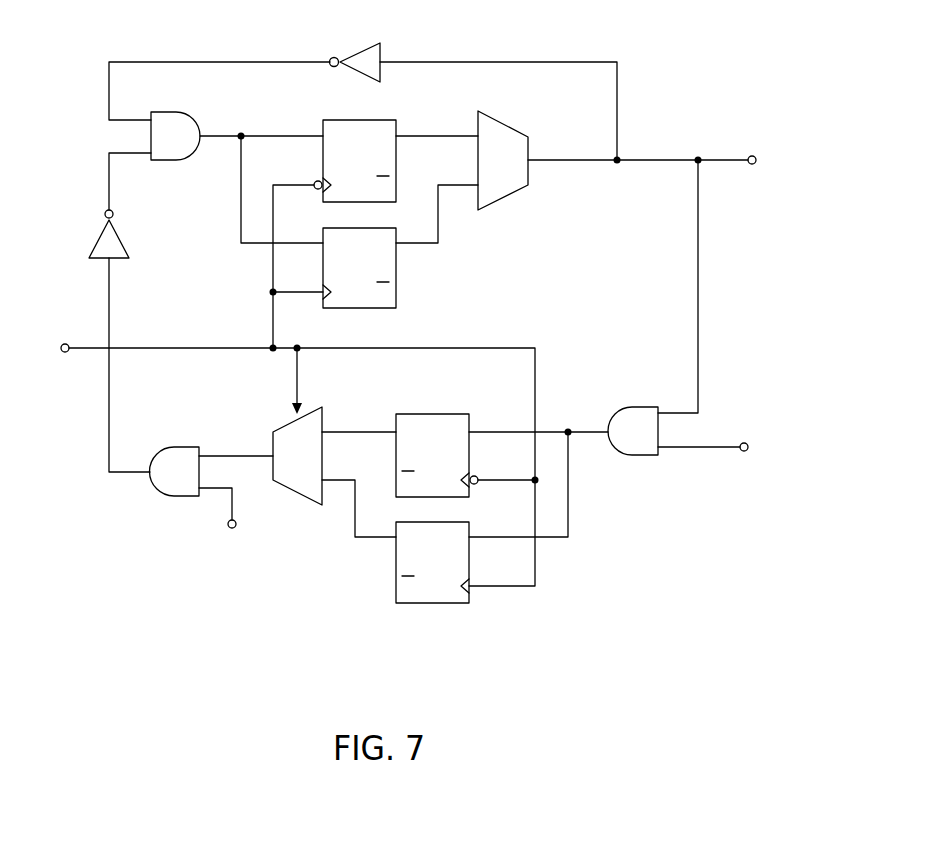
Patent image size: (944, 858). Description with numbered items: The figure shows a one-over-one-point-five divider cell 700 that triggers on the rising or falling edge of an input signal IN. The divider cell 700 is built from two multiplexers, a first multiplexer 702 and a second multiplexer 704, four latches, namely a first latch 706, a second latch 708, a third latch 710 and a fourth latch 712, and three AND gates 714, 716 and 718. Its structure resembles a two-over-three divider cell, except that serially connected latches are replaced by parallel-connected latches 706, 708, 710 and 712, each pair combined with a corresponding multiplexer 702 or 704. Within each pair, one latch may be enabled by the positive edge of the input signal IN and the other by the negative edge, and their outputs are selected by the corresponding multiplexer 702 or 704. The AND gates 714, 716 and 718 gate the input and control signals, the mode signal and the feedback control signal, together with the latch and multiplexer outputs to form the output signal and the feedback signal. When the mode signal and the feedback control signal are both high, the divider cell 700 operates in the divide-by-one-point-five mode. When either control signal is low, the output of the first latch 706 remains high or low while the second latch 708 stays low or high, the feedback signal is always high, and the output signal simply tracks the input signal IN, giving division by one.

The divider cell 700 is at (742, 563).
The mux1 702 is at (528, 178).
The mux2 704 is at (272, 437).
The latch1 706 is at (323, 127).
The latch2 708 is at (396, 270).
The latch 3 710 is at (396, 420).
The latch 4 712 is at (396, 577).
The AND gate 714 is at (176, 162).
The AND gate 716 is at (172, 445).
The AND gate 718 is at (638, 458).